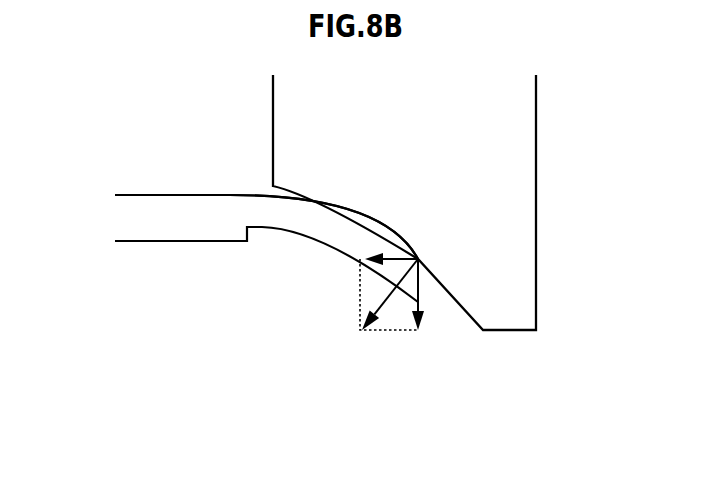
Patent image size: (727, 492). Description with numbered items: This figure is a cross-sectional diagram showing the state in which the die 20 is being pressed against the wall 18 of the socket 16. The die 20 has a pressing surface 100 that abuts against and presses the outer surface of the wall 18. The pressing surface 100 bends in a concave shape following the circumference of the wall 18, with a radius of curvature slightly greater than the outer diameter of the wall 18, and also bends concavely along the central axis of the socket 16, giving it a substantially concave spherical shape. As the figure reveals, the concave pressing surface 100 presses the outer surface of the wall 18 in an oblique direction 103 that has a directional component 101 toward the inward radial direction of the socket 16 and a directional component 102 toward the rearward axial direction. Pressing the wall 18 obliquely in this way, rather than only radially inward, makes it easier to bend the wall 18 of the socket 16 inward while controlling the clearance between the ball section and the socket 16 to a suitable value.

The socket 16 is at (173, 195).
The wall 18 is at (332, 224).
The die 20 is at (537, 138).
The pressing surface 100 is at (300, 198).
The directional component toward the inward radial direction 101 is at (418, 285).
The directional component toward the rearward axial direction 102 is at (392, 259).
The oblique direction 103 is at (388, 298).